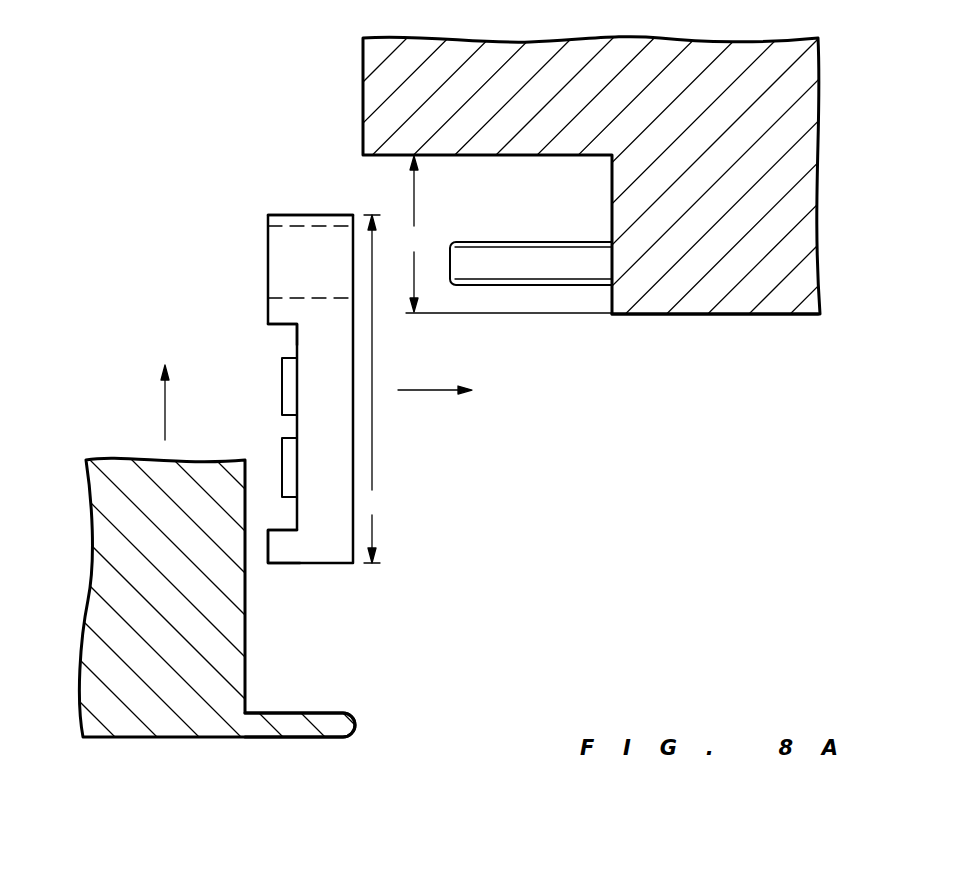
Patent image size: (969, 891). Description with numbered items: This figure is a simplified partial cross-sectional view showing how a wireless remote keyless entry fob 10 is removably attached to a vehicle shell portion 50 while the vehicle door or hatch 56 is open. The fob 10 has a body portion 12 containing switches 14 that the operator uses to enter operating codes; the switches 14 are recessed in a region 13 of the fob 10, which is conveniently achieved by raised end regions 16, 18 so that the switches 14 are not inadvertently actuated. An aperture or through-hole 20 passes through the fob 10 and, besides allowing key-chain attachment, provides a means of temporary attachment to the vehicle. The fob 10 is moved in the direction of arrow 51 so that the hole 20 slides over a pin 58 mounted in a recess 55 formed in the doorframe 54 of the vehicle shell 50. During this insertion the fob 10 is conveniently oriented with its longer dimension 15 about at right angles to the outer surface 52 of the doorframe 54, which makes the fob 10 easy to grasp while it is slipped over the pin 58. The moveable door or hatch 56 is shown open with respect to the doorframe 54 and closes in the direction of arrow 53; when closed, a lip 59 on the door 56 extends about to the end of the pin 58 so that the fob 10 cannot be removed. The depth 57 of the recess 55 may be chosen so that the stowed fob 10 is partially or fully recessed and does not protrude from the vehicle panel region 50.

The remote keyless entry fob 10 is at (400, 447).
The body portion 12 is at (327, 498).
The region 13 is at (297, 342).
The switches 14 is at (282, 387).
The longer dimension 15 is at (378, 389).
The raised end region 16 is at (284, 557).
The raised end region 18 is at (313, 213).
The aperture 20 is at (272, 263).
The vehicle shell portion 50 is at (645, 602).
The arrow 51 is at (428, 389).
The outer surface 52 is at (727, 316).
The arrow 53 is at (163, 412).
The doorframe 54 is at (812, 105).
The recess 55 is at (523, 209).
The vehicle door or hatch 56 is at (98, 525).
The depth 57 is at (506, 234).
The pin 58 is at (572, 249).
The lip 59 is at (330, 717).